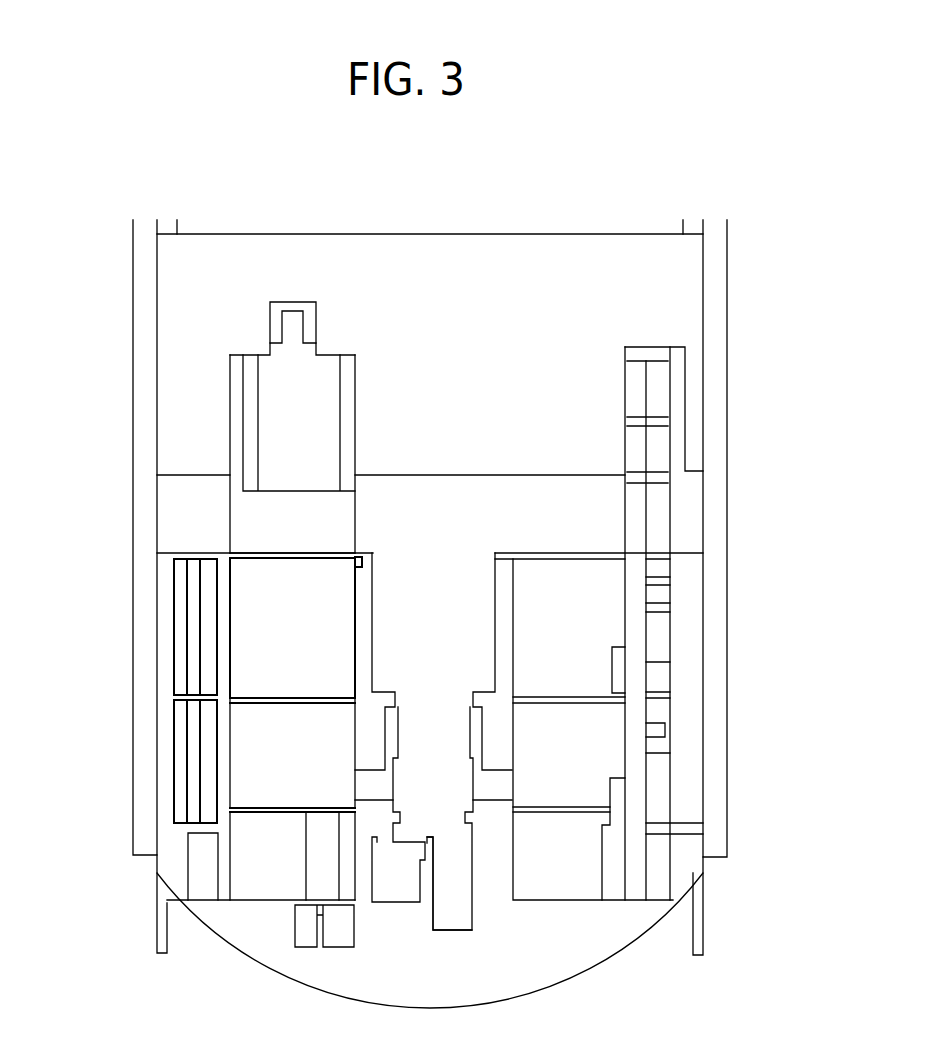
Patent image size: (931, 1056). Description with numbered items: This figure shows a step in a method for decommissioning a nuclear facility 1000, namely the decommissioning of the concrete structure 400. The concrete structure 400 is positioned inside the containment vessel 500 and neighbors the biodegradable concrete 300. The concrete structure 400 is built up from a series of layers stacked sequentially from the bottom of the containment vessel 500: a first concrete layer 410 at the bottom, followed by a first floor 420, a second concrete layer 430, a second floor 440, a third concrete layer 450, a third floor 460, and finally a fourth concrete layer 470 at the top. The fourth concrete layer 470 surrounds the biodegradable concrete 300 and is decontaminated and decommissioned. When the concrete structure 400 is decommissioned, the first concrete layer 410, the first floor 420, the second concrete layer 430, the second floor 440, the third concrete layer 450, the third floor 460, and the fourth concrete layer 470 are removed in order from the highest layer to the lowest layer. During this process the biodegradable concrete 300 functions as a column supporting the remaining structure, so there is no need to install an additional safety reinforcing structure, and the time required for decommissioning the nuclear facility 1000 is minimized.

The nuclear facility 1000 is at (445, 163).
The containment vessel 500 is at (722, 278).
The biodegradable concrete 300 is at (495, 738).
The concrete structure 400 is at (78, 527).
The first concrete layer 410 is at (312, 867).
The first floor 420 is at (253, 808).
The second concrete layer 430 is at (207, 718).
The second floor 440 is at (243, 698).
The third concrete layer 450 is at (207, 607).
The third floor 460 is at (260, 558).
The fourth concrete layer 470 is at (250, 480).